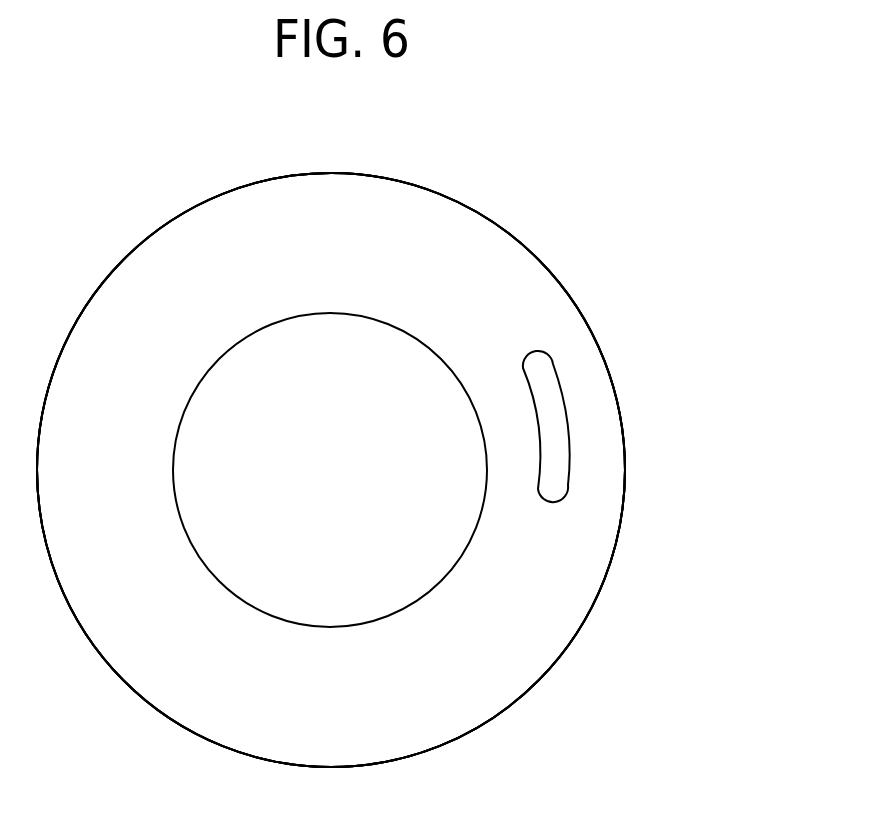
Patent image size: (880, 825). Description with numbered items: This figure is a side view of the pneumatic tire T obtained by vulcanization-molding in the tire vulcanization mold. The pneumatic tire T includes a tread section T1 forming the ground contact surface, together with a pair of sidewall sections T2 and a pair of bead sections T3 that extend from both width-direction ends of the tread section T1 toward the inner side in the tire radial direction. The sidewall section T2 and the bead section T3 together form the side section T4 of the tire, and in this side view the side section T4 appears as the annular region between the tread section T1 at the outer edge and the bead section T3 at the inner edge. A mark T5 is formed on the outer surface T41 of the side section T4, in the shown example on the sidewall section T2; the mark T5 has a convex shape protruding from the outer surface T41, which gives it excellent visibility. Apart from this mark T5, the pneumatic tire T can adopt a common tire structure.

The pneumatic tire T is at (518, 217).
The tread section T1 is at (598, 338).
The sidewall section T2 is at (528, 573).
The bead section T3 is at (438, 598).
The side section T4 is at (705, 567).
The outer surface of side section T41 is at (522, 322).
The mark T5 is at (563, 448).